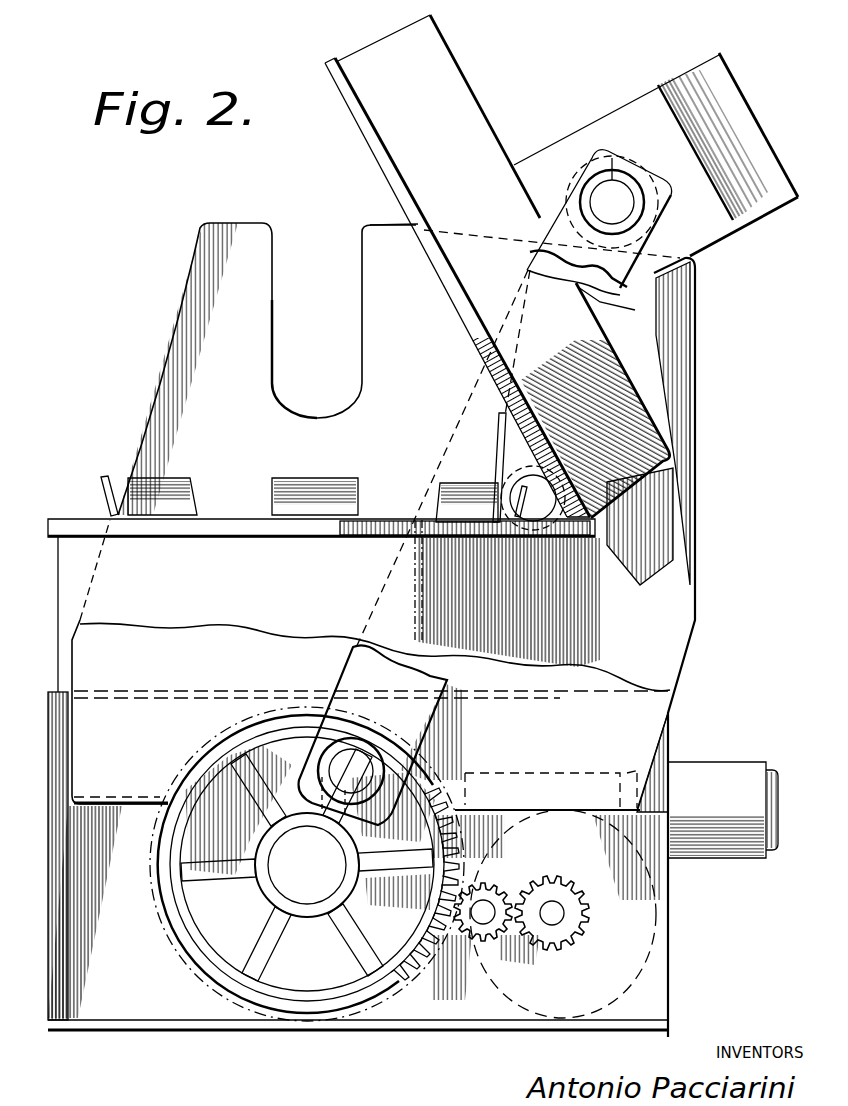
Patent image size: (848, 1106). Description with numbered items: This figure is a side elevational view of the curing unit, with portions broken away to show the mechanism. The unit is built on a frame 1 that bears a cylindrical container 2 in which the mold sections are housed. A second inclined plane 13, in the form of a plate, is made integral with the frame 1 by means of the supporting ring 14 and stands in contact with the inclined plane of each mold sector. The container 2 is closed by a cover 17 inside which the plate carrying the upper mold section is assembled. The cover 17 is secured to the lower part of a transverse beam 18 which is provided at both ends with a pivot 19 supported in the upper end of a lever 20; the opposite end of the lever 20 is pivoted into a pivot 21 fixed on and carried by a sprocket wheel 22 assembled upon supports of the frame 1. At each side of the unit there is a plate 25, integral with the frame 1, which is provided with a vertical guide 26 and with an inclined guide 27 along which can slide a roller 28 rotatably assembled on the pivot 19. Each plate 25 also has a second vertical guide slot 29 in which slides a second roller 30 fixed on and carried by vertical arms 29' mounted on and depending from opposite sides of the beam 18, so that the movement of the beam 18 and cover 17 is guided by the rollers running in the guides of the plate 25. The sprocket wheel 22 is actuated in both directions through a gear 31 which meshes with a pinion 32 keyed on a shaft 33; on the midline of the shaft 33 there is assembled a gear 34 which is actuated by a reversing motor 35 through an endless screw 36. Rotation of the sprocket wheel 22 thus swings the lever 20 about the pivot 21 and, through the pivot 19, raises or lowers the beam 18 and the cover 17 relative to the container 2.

The frame 1 is at (122, 1000).
The cylindrical container 2 is at (72, 560).
The second inclined plane 13 is at (148, 478).
The supporting ring 14 is at (78, 516).
The cover 17 is at (442, 52).
The transverse beam 18 is at (693, 70).
The pivot 19 is at (627, 210).
The lever 20 is at (557, 230).
The pivot 21 is at (367, 768).
The sprocket wheel 22 is at (413, 977).
The plate 25 is at (188, 334).
The vertical guide 26 is at (273, 300).
The inclined guide 27 is at (390, 224).
The roller 28 is at (621, 157).
The second vertical guide slot 29 is at (507, 593).
The vertical arms 29' is at (663, 325).
The second roller 30 is at (517, 463).
The gear 31 is at (493, 947).
The pinion 32 is at (545, 952).
The shaft 33 is at (551, 909).
The gear 34 is at (640, 945).
The reversing motor 35 is at (728, 773).
The endless screw 36 is at (575, 775).